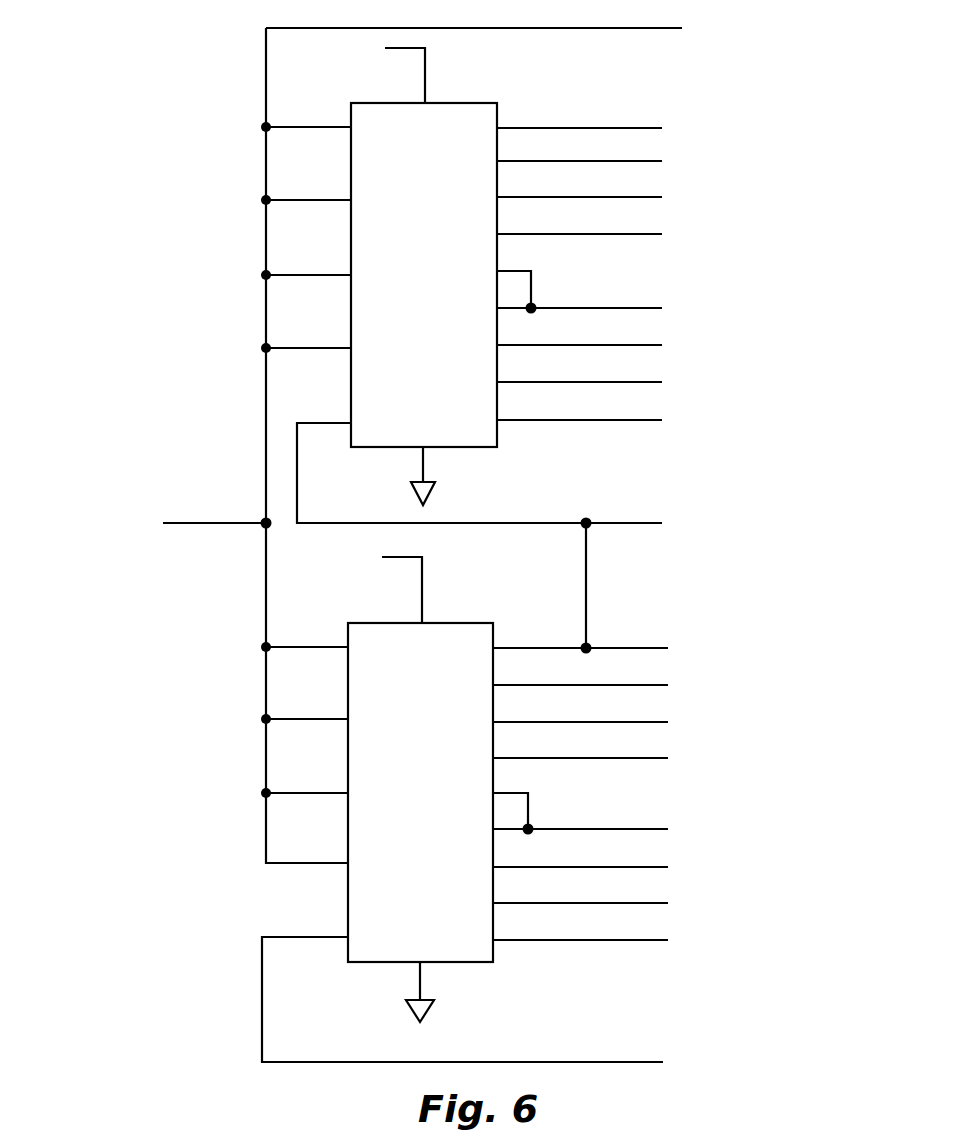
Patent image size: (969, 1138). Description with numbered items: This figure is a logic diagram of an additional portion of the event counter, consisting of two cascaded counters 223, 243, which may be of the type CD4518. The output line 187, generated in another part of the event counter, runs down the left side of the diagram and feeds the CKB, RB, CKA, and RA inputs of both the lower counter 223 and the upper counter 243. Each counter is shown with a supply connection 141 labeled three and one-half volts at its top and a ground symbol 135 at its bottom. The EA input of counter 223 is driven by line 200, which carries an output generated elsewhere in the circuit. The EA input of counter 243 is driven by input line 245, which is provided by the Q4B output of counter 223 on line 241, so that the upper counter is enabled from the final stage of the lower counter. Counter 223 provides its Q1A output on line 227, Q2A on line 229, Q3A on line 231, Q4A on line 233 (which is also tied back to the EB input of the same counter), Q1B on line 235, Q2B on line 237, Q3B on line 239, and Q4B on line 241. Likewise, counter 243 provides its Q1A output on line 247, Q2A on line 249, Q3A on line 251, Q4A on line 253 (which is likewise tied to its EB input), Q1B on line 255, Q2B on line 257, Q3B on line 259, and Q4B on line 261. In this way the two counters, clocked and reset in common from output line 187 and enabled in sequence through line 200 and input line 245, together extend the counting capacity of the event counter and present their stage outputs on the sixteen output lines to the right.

The output line 187 is at (525, 28).
The 3.5 V supply terminal 141 is at (425, 62).
The counter 243 is at (423, 108).
The counter 223 is at (427, 632).
The ground 135 is at (427, 1011).
The line 261 is at (662, 128).
The line 259 is at (662, 161).
The line 257 is at (662, 197).
The line 255 is at (662, 234).
The line 253 is at (662, 308).
The line 251 is at (662, 345).
The line 249 is at (662, 382).
The line 247 is at (662, 420).
The input line 245 is at (662, 523).
The line 241 is at (668, 648).
The line 239 is at (668, 685).
The line 237 is at (668, 722).
The line 235 is at (668, 758).
The line 233 is at (668, 829).
The line 231 is at (668, 867).
The line 229 is at (668, 903).
The line 227 is at (668, 940).
The line 200 is at (663, 1062).